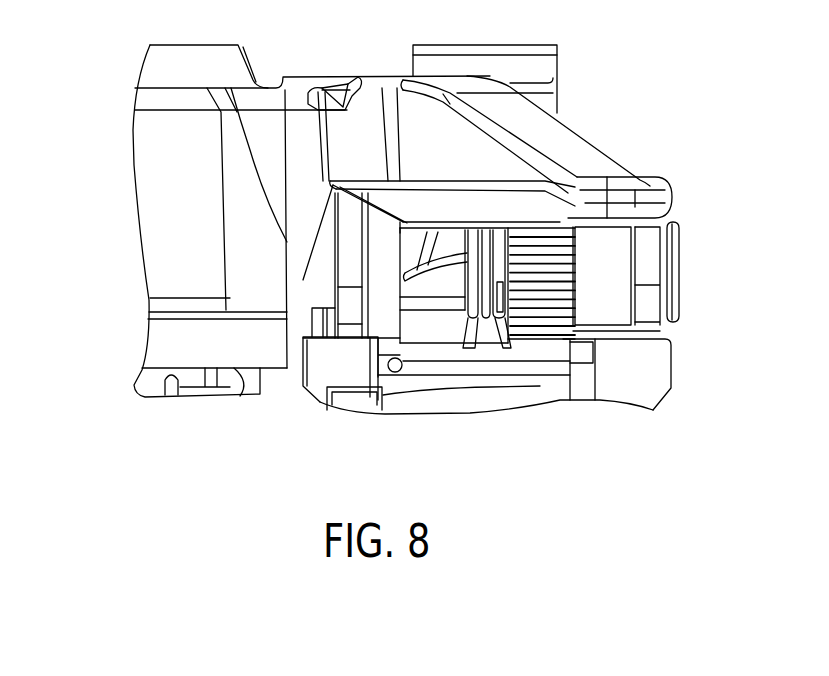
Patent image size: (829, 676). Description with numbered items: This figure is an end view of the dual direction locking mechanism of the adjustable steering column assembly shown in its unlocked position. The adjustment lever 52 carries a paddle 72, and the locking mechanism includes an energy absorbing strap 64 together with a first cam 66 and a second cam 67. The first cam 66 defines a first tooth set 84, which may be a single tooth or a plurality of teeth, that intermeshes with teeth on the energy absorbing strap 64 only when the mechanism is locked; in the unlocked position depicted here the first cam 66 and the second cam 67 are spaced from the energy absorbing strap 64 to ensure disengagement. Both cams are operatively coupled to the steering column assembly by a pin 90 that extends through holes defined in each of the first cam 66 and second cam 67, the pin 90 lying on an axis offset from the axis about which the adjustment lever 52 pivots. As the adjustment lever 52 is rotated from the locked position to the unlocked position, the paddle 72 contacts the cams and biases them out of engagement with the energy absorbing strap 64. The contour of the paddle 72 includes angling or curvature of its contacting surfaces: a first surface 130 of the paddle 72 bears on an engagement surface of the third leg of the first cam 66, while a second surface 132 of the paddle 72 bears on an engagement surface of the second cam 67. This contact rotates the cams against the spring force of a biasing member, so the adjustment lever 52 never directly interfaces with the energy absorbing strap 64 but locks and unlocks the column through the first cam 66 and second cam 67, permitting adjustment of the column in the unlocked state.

The adjustment lever 52 is at (172, 203).
The pin 90 is at (327, 278).
The first surface 130 is at (540, 130).
The paddle 72 is at (562, 146).
The first cam 66 is at (603, 273).
The second cam 67 is at (448, 230).
The second surface 132 is at (450, 230).
The energy absorbing strap 64 is at (473, 383).
The first tooth set 84 is at (553, 303).